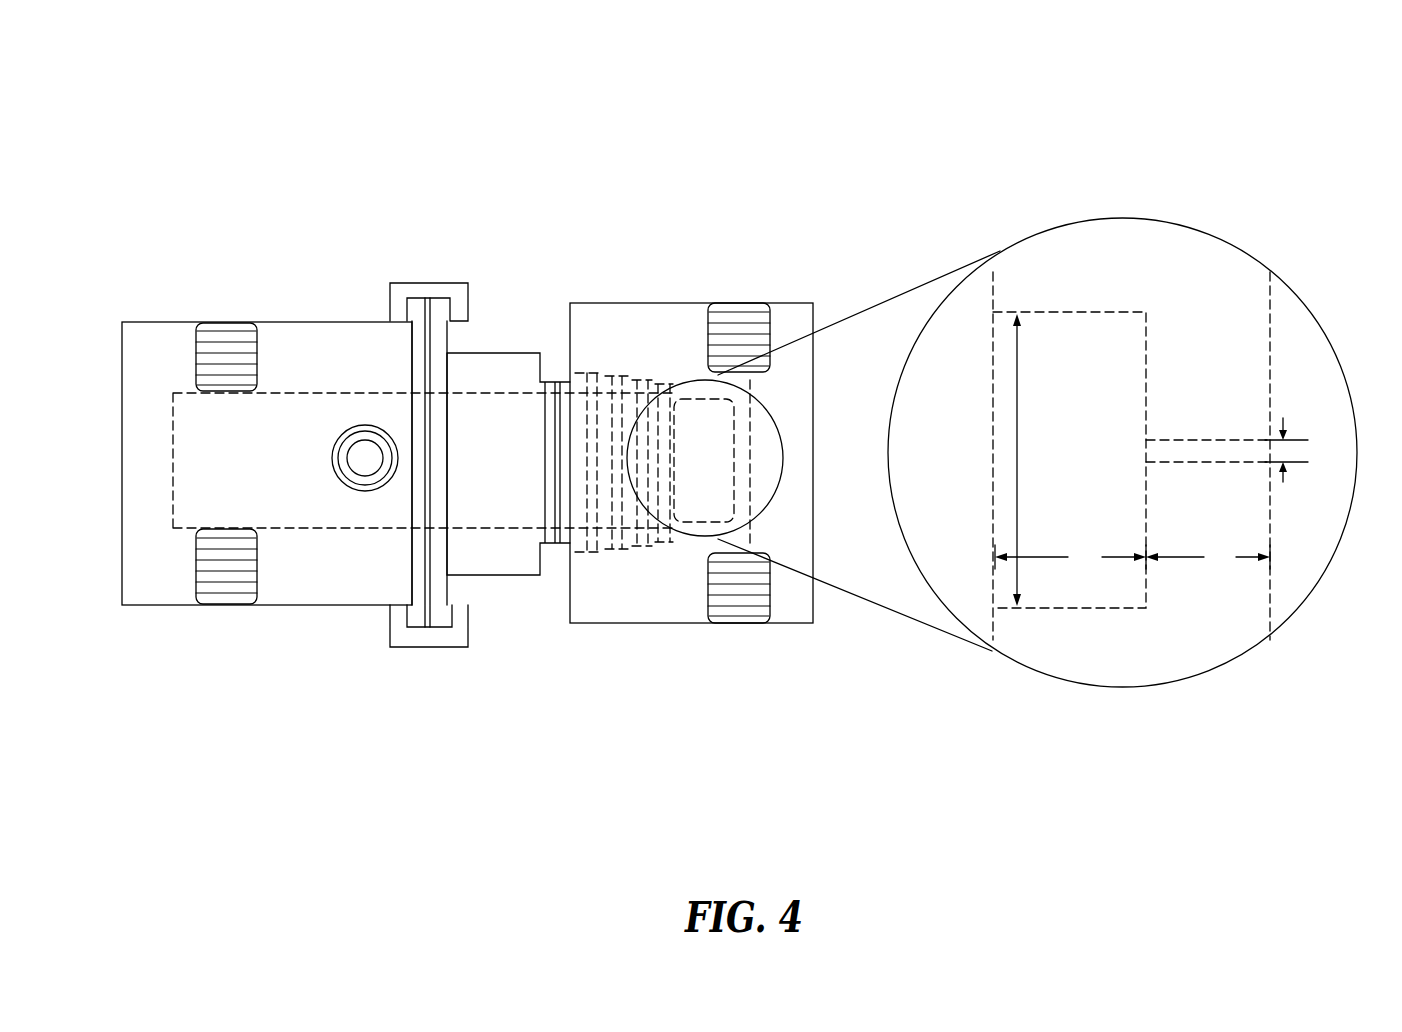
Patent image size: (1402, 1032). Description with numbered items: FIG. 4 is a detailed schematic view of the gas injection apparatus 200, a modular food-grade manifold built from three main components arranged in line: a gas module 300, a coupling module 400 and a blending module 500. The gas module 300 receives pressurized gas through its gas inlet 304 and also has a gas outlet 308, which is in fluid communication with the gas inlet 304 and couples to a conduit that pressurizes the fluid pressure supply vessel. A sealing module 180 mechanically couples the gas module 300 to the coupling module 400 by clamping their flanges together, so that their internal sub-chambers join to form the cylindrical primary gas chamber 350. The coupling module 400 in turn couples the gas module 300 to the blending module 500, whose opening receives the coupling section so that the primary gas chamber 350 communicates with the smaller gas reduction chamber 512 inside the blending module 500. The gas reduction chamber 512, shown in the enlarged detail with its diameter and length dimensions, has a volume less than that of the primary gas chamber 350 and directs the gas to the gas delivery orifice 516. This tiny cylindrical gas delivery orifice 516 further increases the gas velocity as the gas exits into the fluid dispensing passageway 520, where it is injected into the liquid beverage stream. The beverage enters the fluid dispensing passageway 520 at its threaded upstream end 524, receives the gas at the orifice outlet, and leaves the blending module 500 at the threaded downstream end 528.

The gas injection apparatus 200 is at (253, 142).
The gas module 300 is at (148, 368).
The gas inlet 304 is at (226, 352).
The gas outlet 308 is at (226, 592).
The primary gas chamber 350 is at (308, 471).
The coupling module 400 is at (443, 347).
The sealing module 180 is at (390, 627).
The blending module 500 is at (582, 333).
The downstream end 528 is at (737, 323).
The upstream end 524 is at (732, 612).
The gas reduction chamber 512 is at (723, 464).
The gas delivery orifice 516 is at (1173, 440).
The fluid dispensing passageway 520 is at (1302, 548).